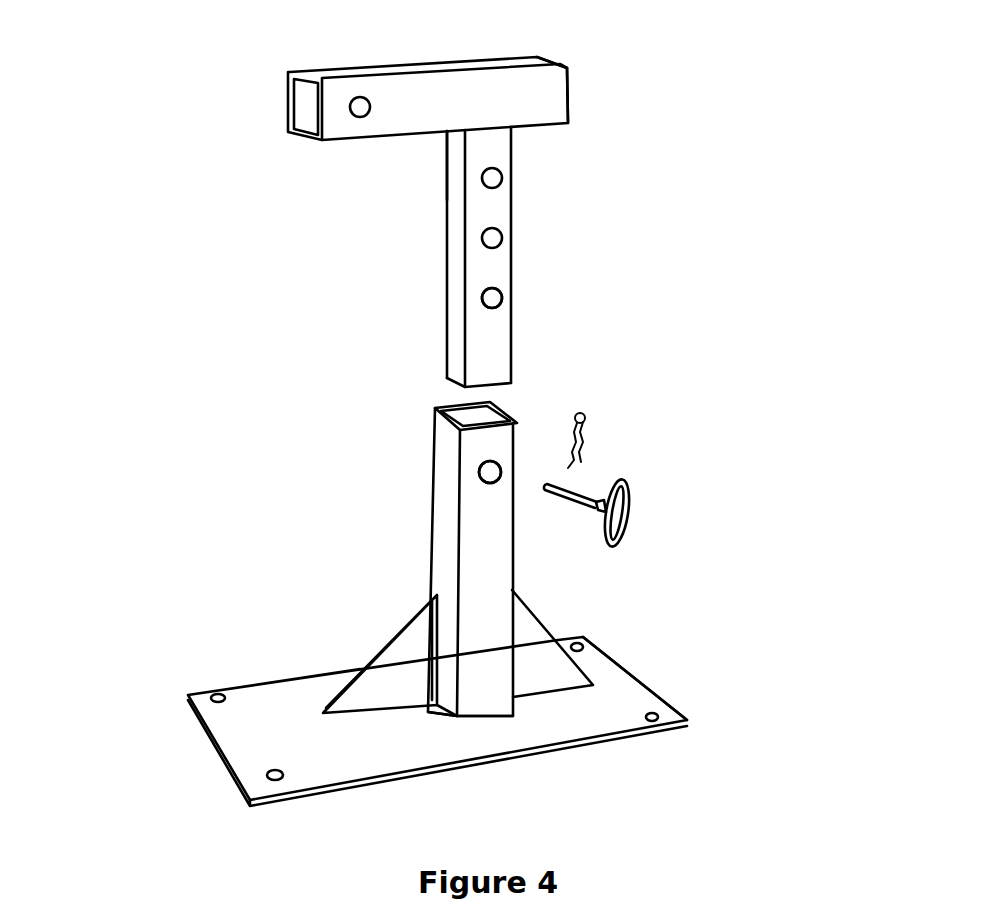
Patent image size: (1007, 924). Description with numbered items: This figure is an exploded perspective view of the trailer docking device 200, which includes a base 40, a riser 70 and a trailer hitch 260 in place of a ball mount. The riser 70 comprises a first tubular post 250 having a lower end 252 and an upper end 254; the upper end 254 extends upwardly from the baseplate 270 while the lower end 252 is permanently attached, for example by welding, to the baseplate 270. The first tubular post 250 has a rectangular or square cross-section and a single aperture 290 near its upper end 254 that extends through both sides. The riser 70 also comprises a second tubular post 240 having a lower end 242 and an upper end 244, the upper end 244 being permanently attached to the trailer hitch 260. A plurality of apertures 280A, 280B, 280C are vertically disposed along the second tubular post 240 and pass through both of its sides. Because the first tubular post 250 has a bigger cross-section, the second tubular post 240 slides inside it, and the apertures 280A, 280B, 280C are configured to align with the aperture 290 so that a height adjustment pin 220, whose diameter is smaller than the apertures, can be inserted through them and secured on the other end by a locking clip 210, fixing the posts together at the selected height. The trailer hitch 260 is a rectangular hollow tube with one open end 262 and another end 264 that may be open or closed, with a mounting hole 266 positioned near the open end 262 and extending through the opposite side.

The trailer docking device 200 is at (210, 579).
The base 40 is at (663, 693).
The riser 70 is at (508, 302).
The locking clip 210 is at (586, 422).
The height adjustment pin 220 is at (630, 500).
The second tubular post 240 is at (512, 256).
The lower end of second tubular post 242 is at (447, 372).
The upper end of second tubular post 244 is at (445, 139).
The first tubular post 250 is at (515, 572).
The lower end of first tubular post 252 is at (515, 714).
The upper end of first tubular post 254 is at (432, 410).
The trailer hitch 260 is at (568, 106).
The open end of trailer hitch 262 is at (287, 91).
The another end of trailer hitch 264 is at (568, 72).
The mounting hole 266 is at (363, 97).
The baseplate 270 is at (610, 660).
The first aperture of second tubular post 280A is at (504, 179).
The second aperture of second tubular post 280B is at (478, 246).
The third aperture of second tubular post 280C is at (478, 308).
The single aperture of first tubular post 290 is at (470, 478).